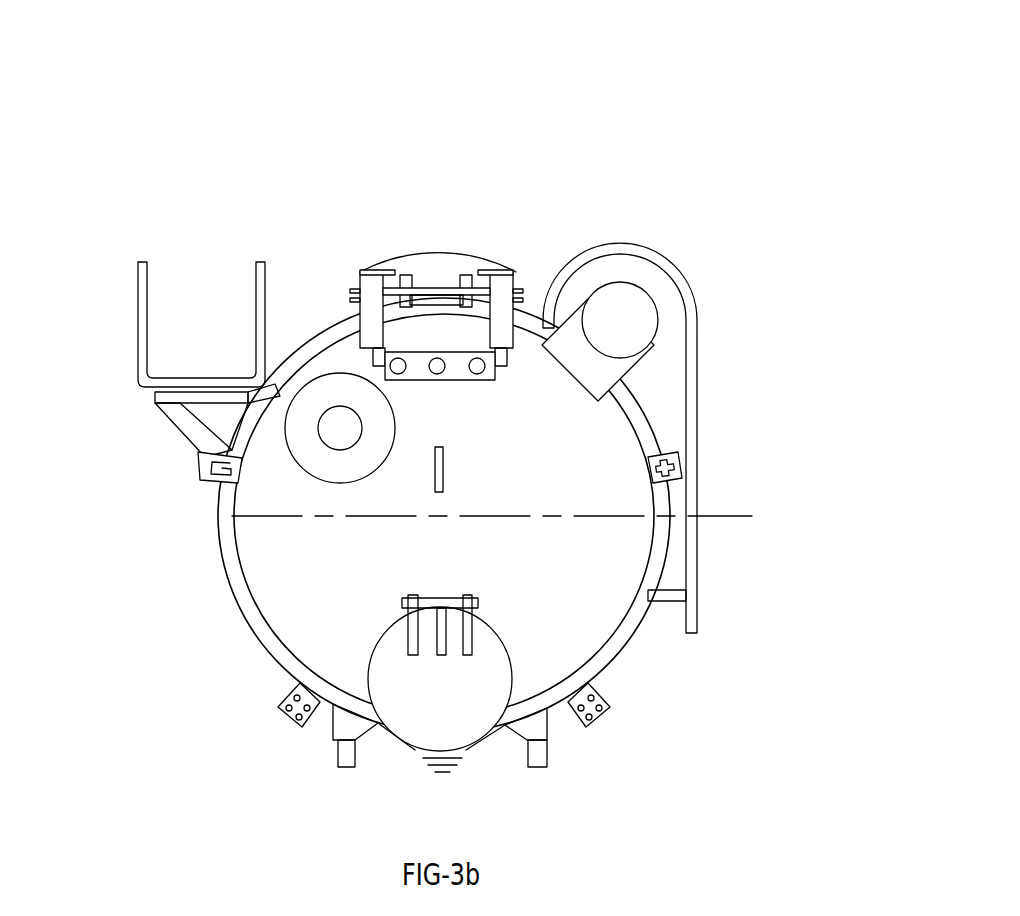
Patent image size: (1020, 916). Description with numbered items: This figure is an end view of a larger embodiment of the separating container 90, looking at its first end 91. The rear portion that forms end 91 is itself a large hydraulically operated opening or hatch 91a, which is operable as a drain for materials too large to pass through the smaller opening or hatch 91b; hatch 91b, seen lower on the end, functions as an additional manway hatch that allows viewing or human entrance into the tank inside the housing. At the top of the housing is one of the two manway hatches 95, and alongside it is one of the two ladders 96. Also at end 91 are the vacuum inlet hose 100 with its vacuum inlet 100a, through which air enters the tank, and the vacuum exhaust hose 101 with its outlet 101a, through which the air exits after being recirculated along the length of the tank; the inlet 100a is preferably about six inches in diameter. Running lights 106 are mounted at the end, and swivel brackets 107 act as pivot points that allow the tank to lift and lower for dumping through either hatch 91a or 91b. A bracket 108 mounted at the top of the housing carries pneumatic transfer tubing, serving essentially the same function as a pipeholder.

The separating container 90 is at (632, 118).
The first end 91 is at (623, 660).
The opening or hatch 91a is at (288, 606).
The opening or hatch 91b is at (410, 730).
The manway hatch 95 is at (505, 262).
The ladder 96 is at (697, 418).
The vacuum inlet hose 100 is at (330, 430).
The vacuum inlet 100a is at (312, 470).
The vacuum exhaust hose 101 is at (667, 335).
The outlet 101a is at (623, 303).
The running light 106 is at (398, 364).
The swivel bracket 107 is at (335, 757).
The bracket 108 is at (197, 330).